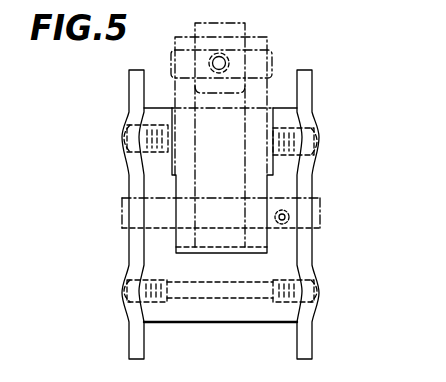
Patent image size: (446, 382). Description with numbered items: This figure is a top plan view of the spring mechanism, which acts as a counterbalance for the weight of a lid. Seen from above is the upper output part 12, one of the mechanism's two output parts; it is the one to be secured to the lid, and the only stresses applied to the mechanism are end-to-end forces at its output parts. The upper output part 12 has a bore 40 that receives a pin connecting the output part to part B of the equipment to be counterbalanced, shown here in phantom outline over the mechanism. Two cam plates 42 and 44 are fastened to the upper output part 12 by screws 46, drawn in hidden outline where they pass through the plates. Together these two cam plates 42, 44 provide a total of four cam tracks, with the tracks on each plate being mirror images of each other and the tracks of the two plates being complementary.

The upper output part 12 is at (214, 320).
The bore 40 is at (120, 198).
The cam plate 42 is at (133, 258).
The cam plate 44 is at (305, 178).
The screws 46 is at (126, 127).
The part of the equipment B is at (260, 97).